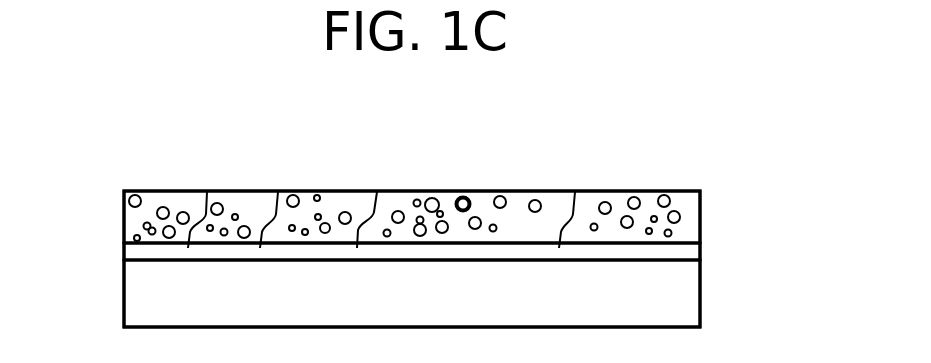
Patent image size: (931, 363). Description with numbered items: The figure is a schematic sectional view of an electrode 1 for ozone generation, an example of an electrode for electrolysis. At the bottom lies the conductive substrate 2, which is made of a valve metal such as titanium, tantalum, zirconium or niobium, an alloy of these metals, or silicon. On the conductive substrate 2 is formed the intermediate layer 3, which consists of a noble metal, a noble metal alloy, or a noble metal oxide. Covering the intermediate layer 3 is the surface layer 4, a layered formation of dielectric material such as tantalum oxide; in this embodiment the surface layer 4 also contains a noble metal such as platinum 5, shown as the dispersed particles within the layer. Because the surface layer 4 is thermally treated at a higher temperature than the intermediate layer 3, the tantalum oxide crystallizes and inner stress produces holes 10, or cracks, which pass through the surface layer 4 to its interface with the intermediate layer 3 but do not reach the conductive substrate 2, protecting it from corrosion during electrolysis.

The electrode for ozone generation 1 is at (502, 106).
The conductive substrate 2 is at (695, 289).
The intermediate layer 3 is at (695, 250).
The surface layer 4 is at (695, 210).
The platinum 5 is at (500, 197).
The holes 10 is at (207, 206).